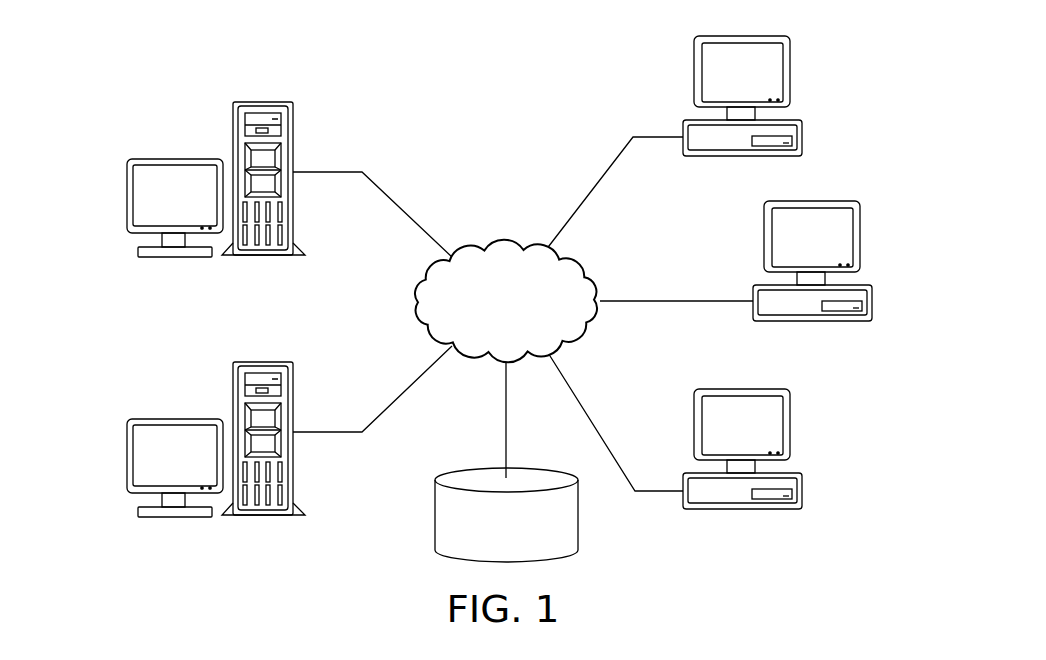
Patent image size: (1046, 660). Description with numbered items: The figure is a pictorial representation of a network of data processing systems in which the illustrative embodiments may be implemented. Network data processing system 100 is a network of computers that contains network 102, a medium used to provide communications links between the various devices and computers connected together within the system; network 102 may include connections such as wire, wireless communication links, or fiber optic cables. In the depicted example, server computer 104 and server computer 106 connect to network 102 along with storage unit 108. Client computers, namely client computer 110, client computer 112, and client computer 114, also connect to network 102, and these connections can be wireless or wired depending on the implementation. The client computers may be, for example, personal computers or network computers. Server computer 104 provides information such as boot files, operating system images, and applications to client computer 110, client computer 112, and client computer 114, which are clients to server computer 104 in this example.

The network data processing system 100 is at (367, 76).
The network 102 is at (478, 252).
The server computer 104 is at (127, 195).
The server computer 106 is at (127, 455).
The storage unit 108 is at (435, 515).
The client computer 110 is at (803, 128).
The client computer 112 is at (874, 310).
The client computer 114 is at (803, 497).